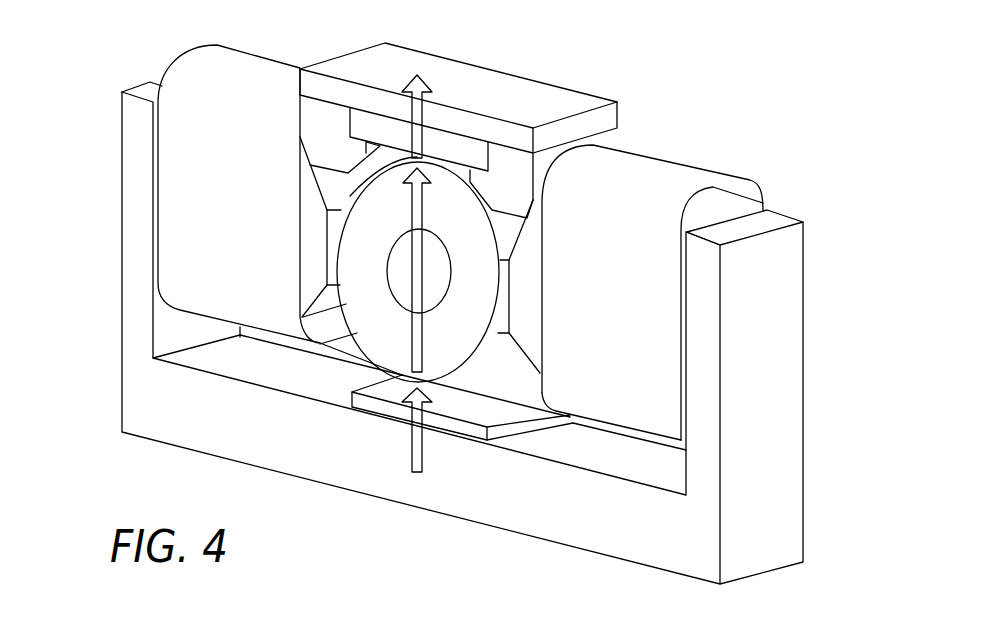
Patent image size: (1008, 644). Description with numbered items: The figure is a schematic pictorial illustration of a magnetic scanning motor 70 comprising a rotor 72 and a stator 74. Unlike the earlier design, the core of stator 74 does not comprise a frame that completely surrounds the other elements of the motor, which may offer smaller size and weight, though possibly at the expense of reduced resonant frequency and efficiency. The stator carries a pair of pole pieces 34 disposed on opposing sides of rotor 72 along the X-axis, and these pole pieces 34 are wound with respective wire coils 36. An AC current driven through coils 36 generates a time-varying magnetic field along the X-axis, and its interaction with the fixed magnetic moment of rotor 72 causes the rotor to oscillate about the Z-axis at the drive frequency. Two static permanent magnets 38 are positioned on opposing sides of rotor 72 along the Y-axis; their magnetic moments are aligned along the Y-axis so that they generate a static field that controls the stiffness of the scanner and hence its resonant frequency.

The magnetic scanning motor 70 is at (807, 120).
The stator 74 is at (122, 200).
The pole piece 34 is at (312, 282).
The wire coil 36 is at (652, 330).
The static permanent magnet 38 is at (448, 146).
The rotor 72 is at (463, 340).